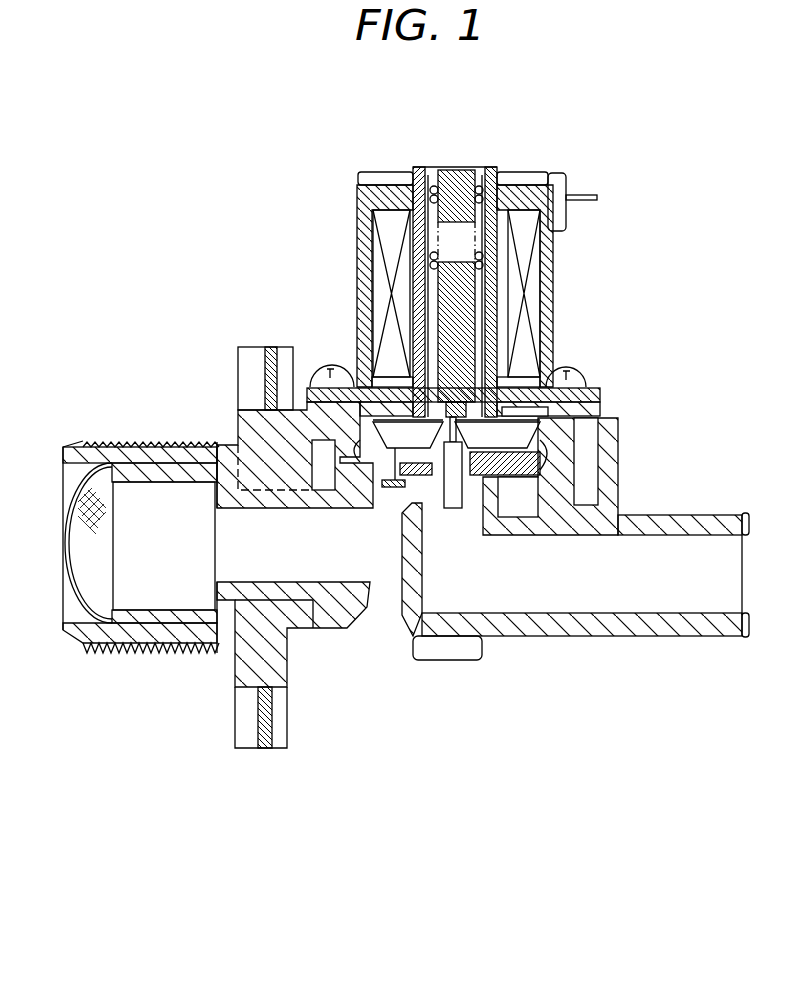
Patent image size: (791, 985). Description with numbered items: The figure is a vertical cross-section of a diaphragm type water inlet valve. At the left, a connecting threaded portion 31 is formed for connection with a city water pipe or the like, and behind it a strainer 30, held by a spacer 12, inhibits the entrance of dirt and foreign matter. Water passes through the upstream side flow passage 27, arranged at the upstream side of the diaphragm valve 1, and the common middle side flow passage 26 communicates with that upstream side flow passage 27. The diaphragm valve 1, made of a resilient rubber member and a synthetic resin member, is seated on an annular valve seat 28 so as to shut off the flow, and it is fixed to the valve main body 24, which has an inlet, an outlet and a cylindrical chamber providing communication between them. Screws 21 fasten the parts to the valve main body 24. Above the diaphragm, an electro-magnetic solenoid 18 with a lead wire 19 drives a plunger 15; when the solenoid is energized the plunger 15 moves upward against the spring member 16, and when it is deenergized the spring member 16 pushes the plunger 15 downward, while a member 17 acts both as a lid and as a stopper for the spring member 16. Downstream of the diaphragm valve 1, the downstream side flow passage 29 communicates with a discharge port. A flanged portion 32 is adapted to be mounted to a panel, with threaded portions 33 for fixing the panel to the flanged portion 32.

The diaphragm valve 1 is at (517, 515).
The spacer 12 is at (172, 613).
The plunger 15 is at (437, 296).
The spring member 16 is at (433, 172).
The member 17 is at (451, 168).
The electro-magnetic solenoid 18 is at (384, 240).
The lead wire 19 is at (578, 196).
The screws 21 is at (570, 377).
The valve main body 24 is at (683, 522).
The common middle side flow passage 26 is at (517, 510).
The upstream side flow passage 27 is at (383, 570).
The annular valve seat 28 is at (422, 495).
The downstream side flow passage 29 is at (665, 602).
The strainer 30 is at (80, 493).
The connecting threaded portion 31 is at (167, 440).
The flanged portion 32 is at (287, 671).
The threaded portions 33 is at (270, 382).